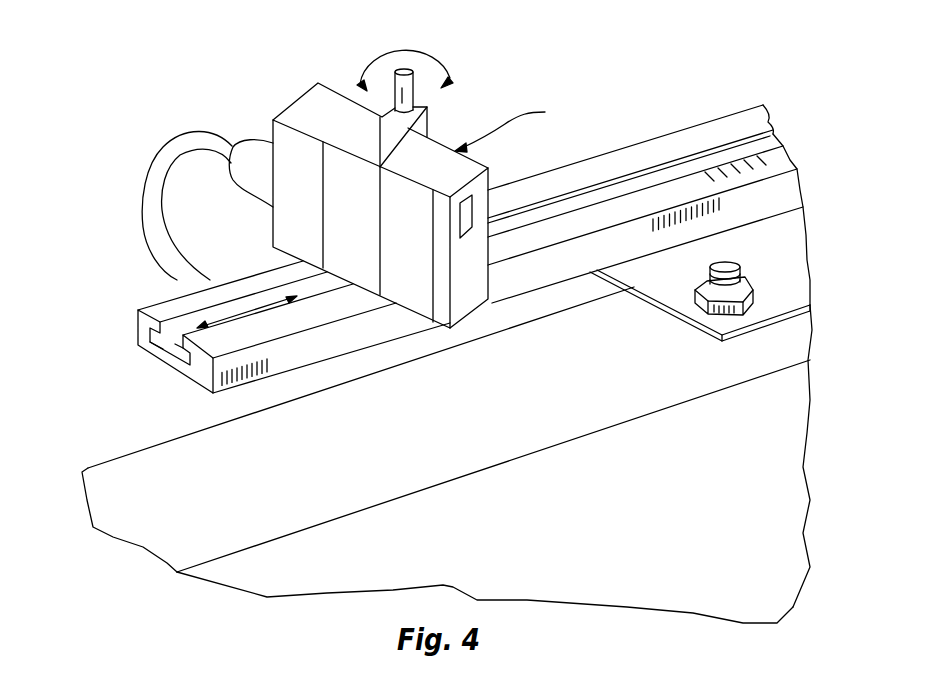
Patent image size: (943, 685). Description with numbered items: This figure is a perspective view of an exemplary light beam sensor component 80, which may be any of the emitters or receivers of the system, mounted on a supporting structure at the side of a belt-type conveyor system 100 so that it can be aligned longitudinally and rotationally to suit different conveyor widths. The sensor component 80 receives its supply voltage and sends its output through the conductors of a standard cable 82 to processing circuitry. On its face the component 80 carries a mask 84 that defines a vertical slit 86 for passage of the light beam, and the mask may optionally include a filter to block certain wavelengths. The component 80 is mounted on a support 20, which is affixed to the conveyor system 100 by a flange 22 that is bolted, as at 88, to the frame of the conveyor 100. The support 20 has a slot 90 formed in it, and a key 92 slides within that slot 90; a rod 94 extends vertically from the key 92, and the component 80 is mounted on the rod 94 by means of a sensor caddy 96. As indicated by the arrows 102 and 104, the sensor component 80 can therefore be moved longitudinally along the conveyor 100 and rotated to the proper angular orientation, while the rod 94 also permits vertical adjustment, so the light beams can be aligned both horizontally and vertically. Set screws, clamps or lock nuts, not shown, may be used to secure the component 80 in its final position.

The support 20 is at (245, 315).
The flange 22 is at (679, 204).
The sensor component 80 is at (417, 176).
The cable 82 is at (163, 155).
The mask 84 is at (492, 184).
The vertical slit 86 is at (471, 226).
The bolt 88 is at (752, 292).
The slot 90 is at (138, 349).
The key 92 is at (297, 296).
The rod 94 is at (413, 92).
The sensor caddy 96 is at (362, 128).
The conveyor system 100 is at (153, 482).
The arrow 102 is at (195, 326).
The arrow 104 is at (452, 64).